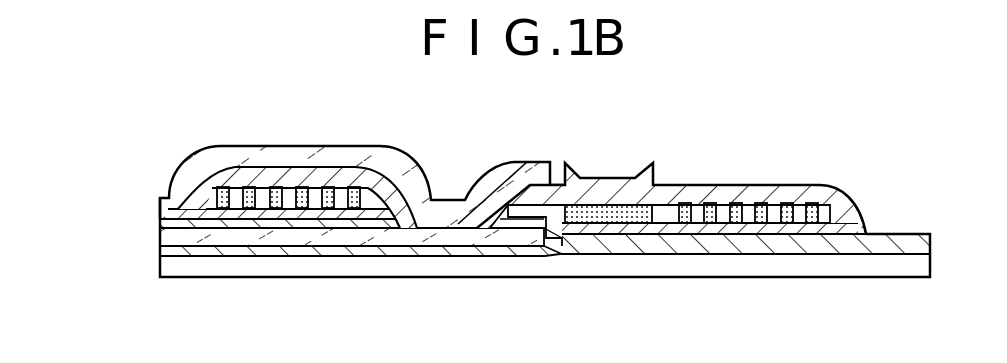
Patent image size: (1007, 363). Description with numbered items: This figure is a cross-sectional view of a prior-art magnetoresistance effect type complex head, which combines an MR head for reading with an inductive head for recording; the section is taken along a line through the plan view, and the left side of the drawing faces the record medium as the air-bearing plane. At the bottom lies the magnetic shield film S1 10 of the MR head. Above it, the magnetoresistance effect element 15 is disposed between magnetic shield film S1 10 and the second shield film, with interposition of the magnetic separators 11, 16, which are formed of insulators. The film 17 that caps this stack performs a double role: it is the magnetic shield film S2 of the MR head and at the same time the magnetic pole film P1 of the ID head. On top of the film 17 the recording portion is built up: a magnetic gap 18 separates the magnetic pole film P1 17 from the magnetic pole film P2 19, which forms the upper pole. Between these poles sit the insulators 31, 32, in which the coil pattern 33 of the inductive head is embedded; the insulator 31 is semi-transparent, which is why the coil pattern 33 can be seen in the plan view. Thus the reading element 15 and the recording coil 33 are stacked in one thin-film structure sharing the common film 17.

The magnetic shield film S1 10 is at (575, 266).
The magnetic separator 11 is at (258, 257).
The magnetic separator 16 is at (258, 257).
The magnetoresistance effect element 15 is at (160, 255).
The magnetic shield film S2 / magnetic pole film P1 17 is at (446, 240).
The magnetic gap 18 is at (160, 223).
The magnetic pole film P2 19 is at (188, 178).
The insulator 31 is at (368, 172).
The insulator 32 is at (406, 181).
The coil pattern 33 is at (317, 188).